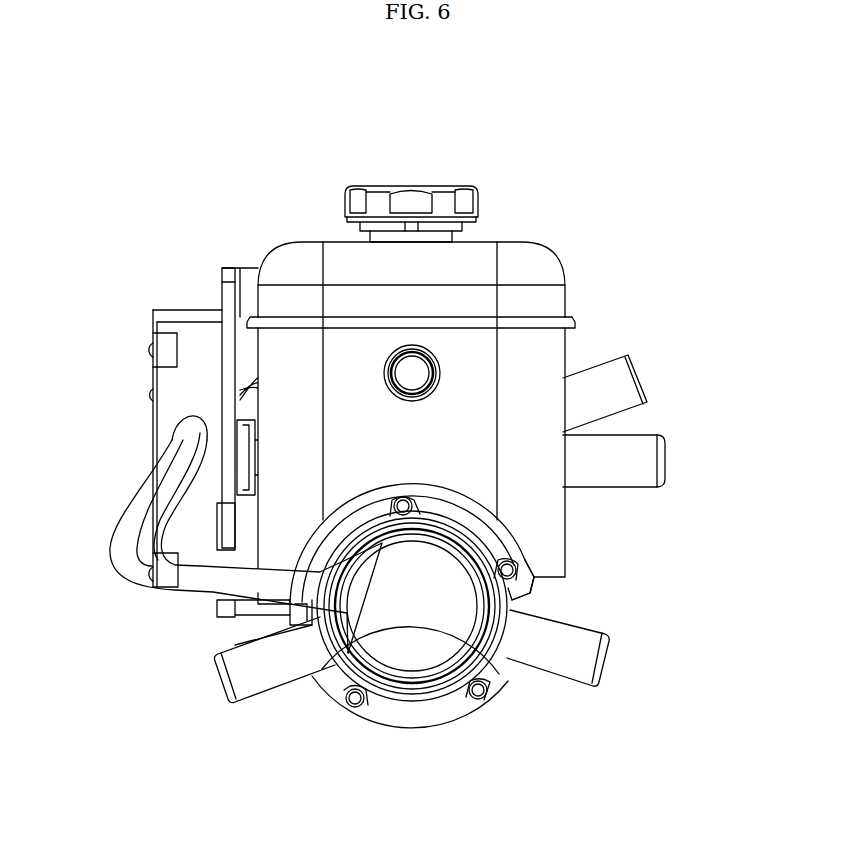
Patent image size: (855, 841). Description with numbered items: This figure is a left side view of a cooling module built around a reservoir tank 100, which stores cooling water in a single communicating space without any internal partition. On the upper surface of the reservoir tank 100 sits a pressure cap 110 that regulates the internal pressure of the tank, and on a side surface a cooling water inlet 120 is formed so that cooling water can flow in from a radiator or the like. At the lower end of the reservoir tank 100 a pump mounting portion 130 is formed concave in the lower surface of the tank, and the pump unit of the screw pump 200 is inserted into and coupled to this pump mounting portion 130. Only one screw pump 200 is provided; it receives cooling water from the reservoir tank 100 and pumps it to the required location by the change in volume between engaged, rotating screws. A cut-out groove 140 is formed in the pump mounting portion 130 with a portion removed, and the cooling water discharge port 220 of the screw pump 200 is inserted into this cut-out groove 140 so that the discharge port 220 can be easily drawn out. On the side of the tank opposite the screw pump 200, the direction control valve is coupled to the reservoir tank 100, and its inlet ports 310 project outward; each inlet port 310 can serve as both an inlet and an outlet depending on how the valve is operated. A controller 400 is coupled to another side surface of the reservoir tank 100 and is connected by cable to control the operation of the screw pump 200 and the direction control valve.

The reservoir tank 100 is at (508, 242).
The pressure cap 110 is at (441, 186).
The cooling water inlet 120 is at (387, 347).
The pump mounting portion 130 is at (462, 722).
The cut-out groove 140 is at (530, 593).
The screw pump 200 is at (428, 708).
The cooling water discharge port 220 is at (212, 682).
The inlet port 310 is at (648, 373).
The controller 400 is at (152, 333).